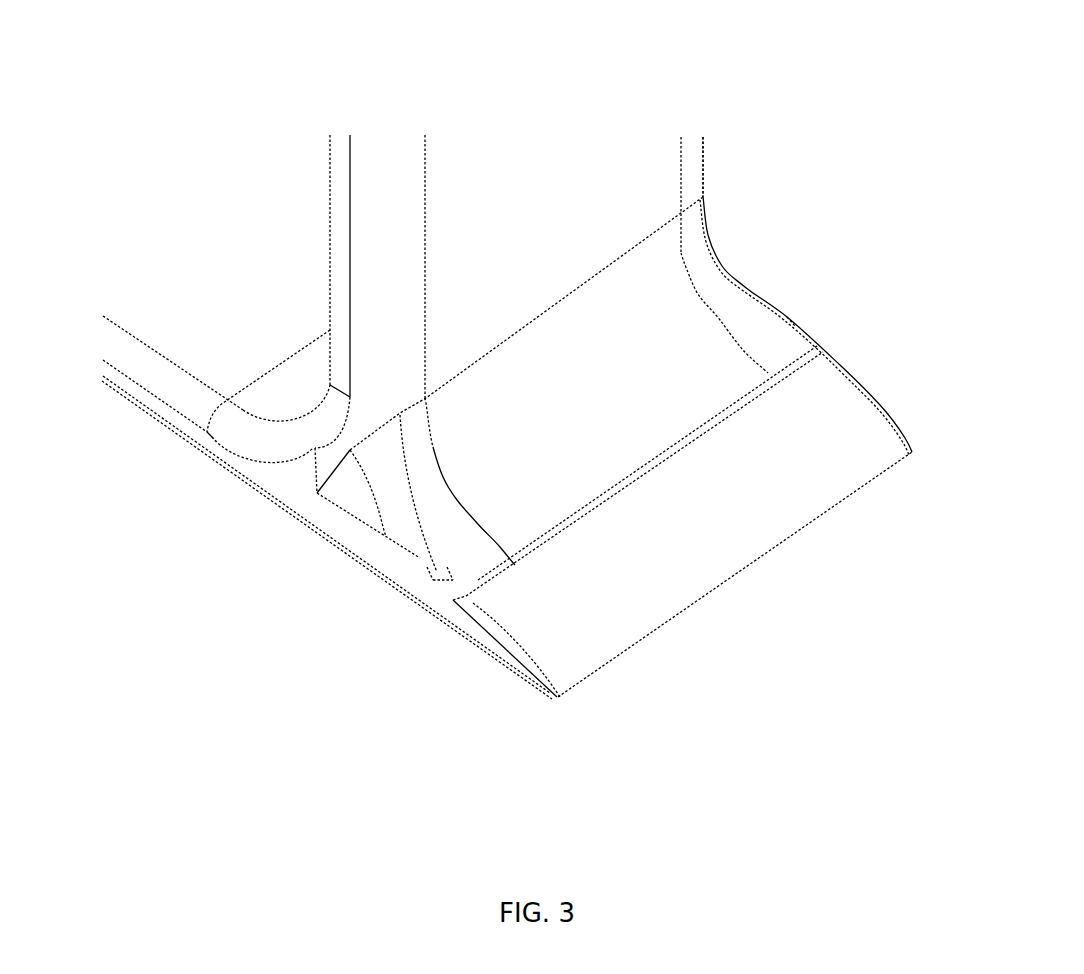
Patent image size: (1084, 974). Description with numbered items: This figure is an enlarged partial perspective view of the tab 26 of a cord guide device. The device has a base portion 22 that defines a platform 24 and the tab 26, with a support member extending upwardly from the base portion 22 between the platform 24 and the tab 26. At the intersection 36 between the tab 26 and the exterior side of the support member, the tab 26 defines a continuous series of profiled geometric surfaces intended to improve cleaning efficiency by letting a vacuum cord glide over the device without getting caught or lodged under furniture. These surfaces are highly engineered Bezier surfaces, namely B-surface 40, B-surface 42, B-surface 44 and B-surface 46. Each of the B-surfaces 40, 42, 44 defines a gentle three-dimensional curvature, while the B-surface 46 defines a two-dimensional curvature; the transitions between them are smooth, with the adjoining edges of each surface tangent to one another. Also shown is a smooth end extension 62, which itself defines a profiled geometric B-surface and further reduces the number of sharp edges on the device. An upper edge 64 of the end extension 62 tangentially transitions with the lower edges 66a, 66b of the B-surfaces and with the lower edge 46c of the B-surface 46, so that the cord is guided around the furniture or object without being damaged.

The base portion 22 is at (252, 502).
The platform 24 is at (141, 407).
The tab 26 is at (492, 653).
The intersection 36 is at (802, 195).
The B-surface 40 is at (353, 485).
The B-surface 42 is at (398, 523).
The B-surface 44 is at (440, 523).
The B-surface 46 is at (668, 285).
The lower edge 46c is at (693, 418).
The end extension 62 is at (680, 585).
The upper edge 64 is at (588, 513).
The lower edge 66a is at (492, 563).
The lower edge 66b is at (792, 357).